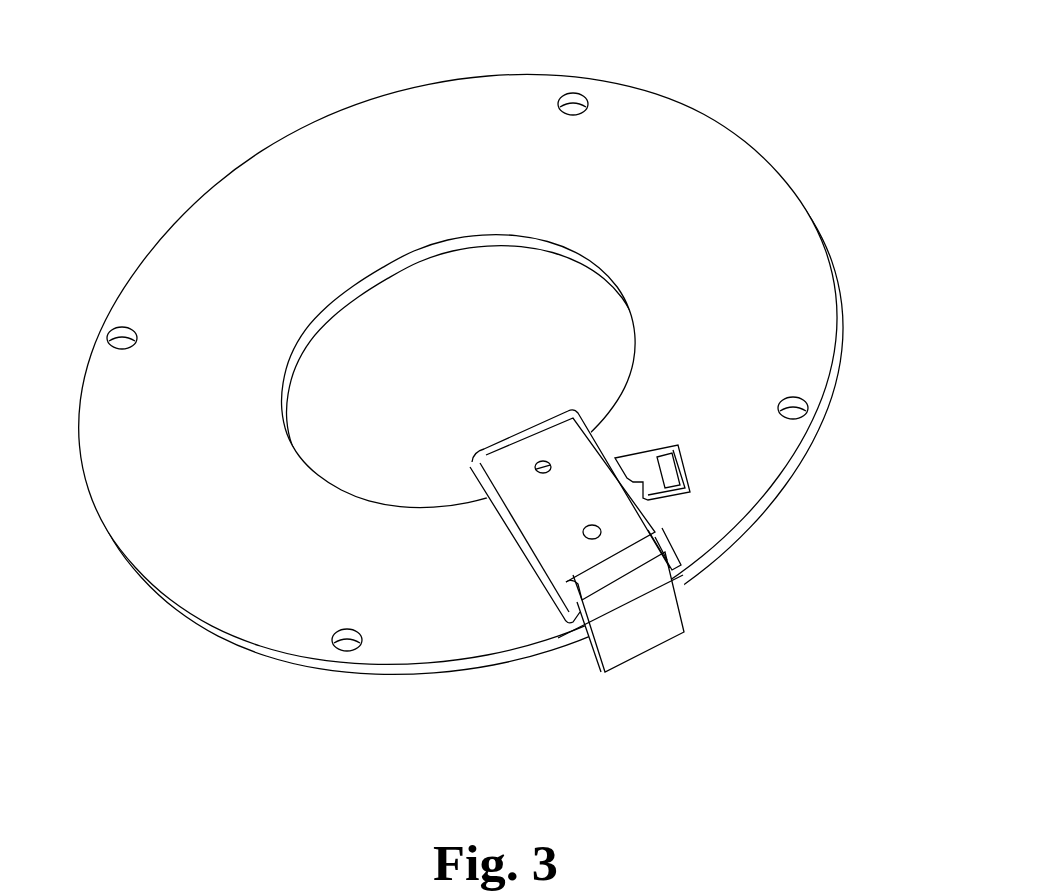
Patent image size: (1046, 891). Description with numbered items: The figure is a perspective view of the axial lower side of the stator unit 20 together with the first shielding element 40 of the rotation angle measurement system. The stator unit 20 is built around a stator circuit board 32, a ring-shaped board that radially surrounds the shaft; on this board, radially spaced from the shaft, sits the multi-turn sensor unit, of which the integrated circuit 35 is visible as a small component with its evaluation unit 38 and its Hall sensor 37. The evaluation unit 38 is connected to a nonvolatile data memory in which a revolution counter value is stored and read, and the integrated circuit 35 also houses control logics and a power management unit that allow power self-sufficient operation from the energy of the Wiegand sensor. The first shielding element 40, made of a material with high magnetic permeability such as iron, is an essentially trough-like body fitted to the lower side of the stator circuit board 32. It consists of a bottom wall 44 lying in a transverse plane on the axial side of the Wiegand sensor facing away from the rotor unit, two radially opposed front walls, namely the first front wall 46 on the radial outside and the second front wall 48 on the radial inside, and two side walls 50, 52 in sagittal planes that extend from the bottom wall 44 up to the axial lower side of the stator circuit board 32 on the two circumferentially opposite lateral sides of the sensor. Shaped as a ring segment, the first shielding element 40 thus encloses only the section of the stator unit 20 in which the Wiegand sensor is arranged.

The stator unit 20 is at (106, 177).
The stator circuit board 32 is at (687, 173).
The integrated circuit 35 is at (657, 420).
The Hall sensor 37 is at (668, 503).
The evaluation unit 38 is at (678, 470).
The first shielding element 40 is at (695, 665).
The bottom wall 44 is at (617, 532).
The first front wall 46 is at (623, 628).
The second front wall 48 is at (512, 432).
The first side wall 50 is at (574, 627).
The second side wall 52 is at (678, 560).